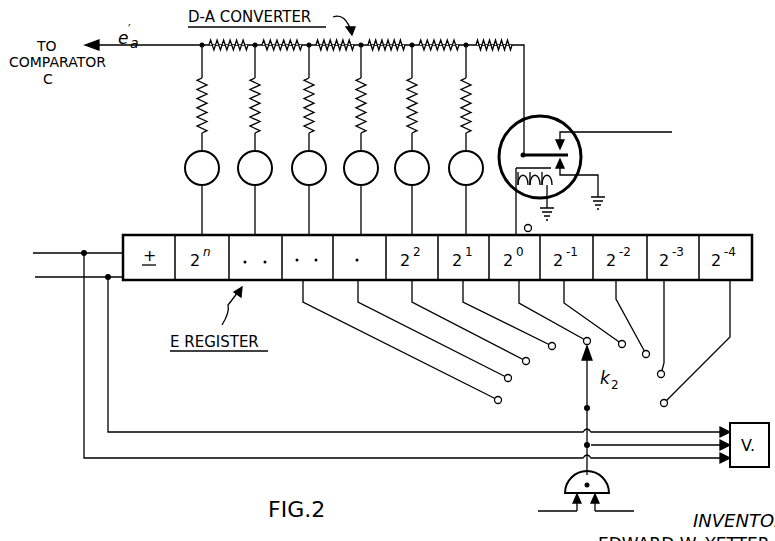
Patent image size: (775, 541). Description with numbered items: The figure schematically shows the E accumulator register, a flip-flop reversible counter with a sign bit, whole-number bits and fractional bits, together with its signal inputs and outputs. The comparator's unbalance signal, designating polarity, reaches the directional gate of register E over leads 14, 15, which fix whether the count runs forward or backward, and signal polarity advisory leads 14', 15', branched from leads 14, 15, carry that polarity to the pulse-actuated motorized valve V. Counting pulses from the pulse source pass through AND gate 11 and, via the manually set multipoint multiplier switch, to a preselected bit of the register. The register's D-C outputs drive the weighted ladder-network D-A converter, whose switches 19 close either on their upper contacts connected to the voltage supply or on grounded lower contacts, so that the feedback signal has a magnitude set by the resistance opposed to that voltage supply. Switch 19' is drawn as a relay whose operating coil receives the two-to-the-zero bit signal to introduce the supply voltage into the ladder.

The AND gate 11 is at (605, 488).
The lead 14 is at (78, 235).
The lead 15 is at (79, 294).
The signal polarity advisory lead 14' is at (407, 358).
The signal polarity advisory lead 15' is at (419, 357).
The switch 19 is at (334, 181).
The switch 19' is at (620, 153).